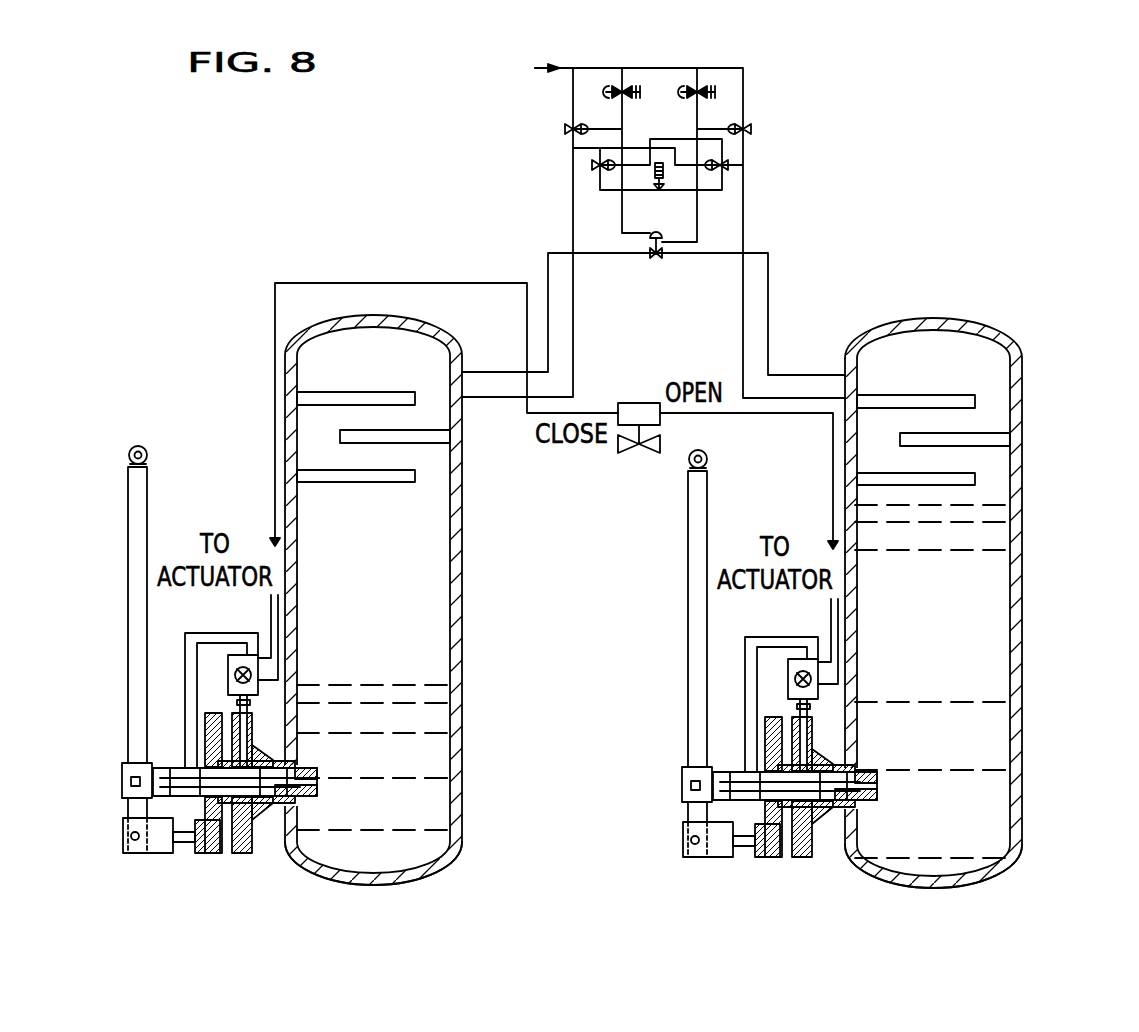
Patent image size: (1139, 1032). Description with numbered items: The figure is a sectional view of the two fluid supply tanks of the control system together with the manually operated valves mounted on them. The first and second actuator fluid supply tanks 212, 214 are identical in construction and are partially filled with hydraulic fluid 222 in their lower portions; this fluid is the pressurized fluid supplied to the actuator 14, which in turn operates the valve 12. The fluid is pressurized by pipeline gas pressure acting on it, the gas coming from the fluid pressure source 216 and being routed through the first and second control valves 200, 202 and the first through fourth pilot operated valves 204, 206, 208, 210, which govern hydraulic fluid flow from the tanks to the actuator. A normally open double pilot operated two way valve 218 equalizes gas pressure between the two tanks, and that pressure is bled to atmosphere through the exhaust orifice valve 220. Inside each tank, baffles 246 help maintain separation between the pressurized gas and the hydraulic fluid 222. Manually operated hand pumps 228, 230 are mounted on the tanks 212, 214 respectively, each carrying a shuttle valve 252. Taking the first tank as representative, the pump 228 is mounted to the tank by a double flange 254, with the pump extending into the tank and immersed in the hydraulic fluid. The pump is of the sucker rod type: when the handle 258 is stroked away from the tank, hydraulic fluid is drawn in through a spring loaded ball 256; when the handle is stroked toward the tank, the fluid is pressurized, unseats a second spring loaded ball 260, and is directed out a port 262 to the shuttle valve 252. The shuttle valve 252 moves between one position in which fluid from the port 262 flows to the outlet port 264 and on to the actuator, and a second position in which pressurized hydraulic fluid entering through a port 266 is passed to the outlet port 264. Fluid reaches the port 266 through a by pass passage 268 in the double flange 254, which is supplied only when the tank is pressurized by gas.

The valve 12 is at (650, 452).
The actuator 14 is at (639, 403).
The first control valve 200 is at (622, 88).
The second control valve 202 is at (697, 88).
The first pilot operated valve 204 is at (566, 129).
The second pilot operated valve 206 is at (592, 165).
The third pilot operated valve 208 is at (751, 129).
The fourth pilot operated valve 210 is at (729, 165).
The first actuator fluid supply tank 212 is at (463, 548).
The second actuator fluid supply tank 214 is at (887, 328).
The fluid pressure source 216 is at (572, 66).
The normally open double pilot operated two way valve 218 is at (658, 258).
The exhaust orifice valve 220 is at (655, 187).
The hydraulic fluid 222 is at (438, 805).
The hand pump 228 is at (270, 793).
The hand pump 230 is at (855, 805).
The baffles 246 is at (352, 432).
The shuttle valve 252 is at (258, 690).
The double flange 254 is at (240, 855).
The spring loaded ball 256 is at (270, 778).
The handle 258 is at (147, 491).
The spring loaded ball 260 is at (205, 800).
The port 262 is at (190, 767).
The outlet port 264 is at (255, 655).
The port 266 is at (252, 697).
The by pass passage 268 is at (218, 765).